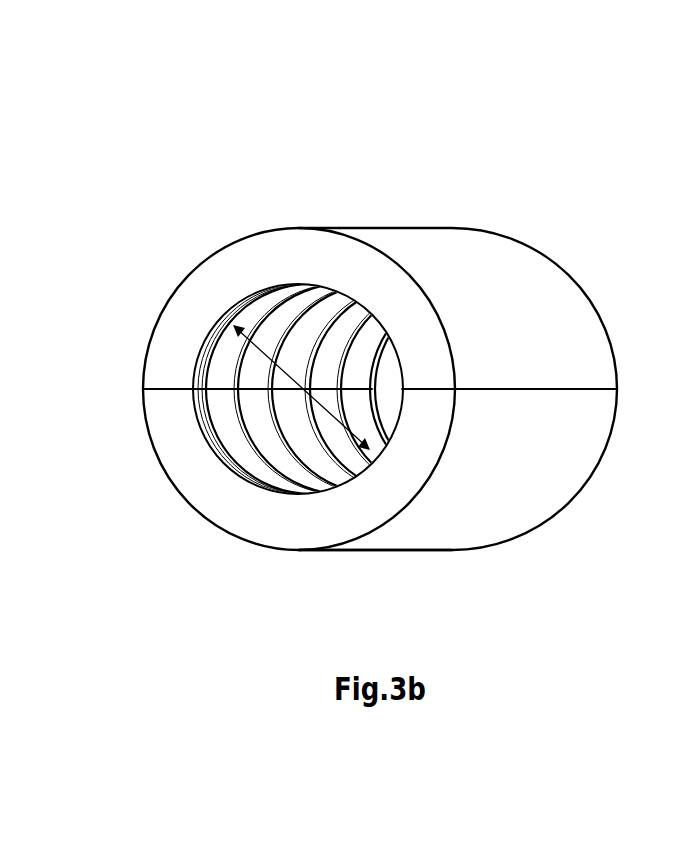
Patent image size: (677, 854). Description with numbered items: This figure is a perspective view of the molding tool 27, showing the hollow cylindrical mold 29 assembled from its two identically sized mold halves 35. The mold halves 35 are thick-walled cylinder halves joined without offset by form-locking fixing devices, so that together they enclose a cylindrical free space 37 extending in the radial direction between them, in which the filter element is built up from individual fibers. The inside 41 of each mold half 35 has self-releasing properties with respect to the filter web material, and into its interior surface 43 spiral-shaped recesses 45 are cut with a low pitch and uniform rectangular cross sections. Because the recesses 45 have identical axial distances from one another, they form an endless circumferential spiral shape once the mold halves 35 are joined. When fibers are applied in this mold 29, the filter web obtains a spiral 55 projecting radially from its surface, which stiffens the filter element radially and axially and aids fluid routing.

The molding tool 27 is at (552, 244).
The hollow cylindrical mold 29 is at (259, 553).
The mold half 35 is at (250, 262).
The cylindrical free space 37 is at (298, 390).
The inside 41 is at (290, 397).
The surface 43 is at (340, 468).
The recesses 45 is at (345, 374).
The spiral 55 is at (232, 366).